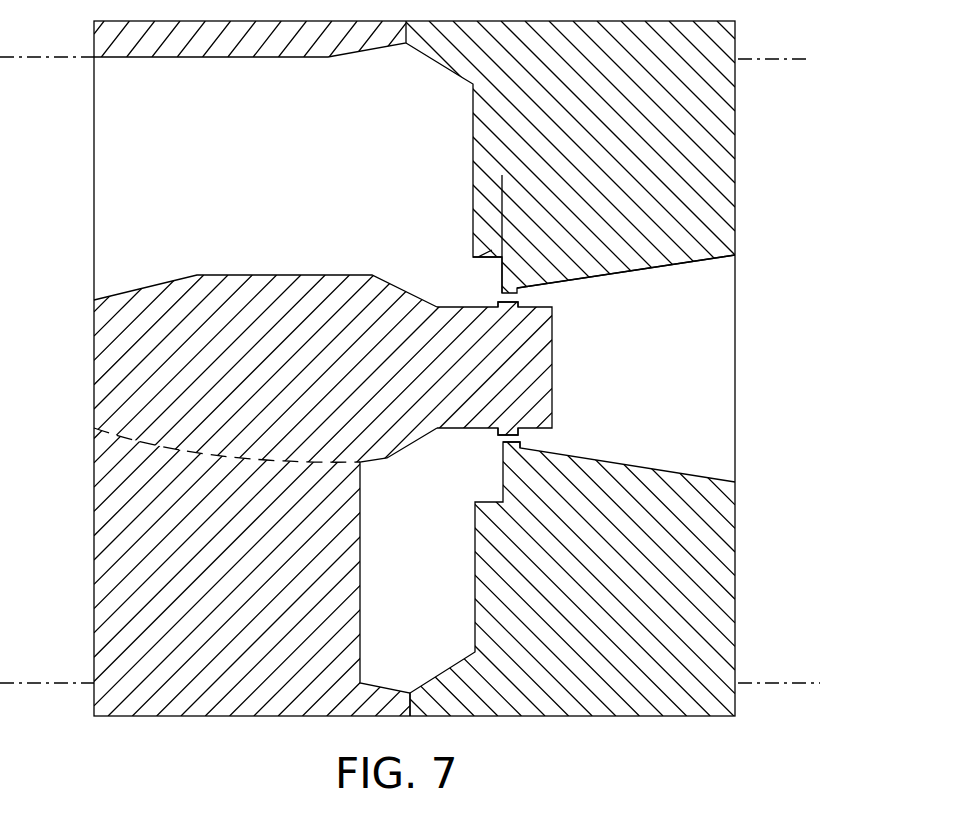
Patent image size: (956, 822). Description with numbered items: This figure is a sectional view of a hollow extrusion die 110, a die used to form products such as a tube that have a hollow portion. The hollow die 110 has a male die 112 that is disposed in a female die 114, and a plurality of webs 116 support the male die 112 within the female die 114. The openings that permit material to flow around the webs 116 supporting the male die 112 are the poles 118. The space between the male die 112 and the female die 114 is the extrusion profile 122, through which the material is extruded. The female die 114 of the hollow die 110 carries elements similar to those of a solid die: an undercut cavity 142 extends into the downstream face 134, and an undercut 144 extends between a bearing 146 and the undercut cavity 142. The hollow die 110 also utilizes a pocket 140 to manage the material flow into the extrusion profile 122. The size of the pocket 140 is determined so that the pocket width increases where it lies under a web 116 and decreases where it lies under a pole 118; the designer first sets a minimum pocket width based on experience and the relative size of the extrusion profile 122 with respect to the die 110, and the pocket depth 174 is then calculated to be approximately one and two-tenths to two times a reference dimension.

The hollow extrusion die 110 is at (592, 730).
The male die 112 is at (556, 380).
The female die 114 is at (737, 538).
The web 116 is at (178, 582).
The pole 118 is at (150, 185).
The extrusion profile 122 is at (505, 313).
The downstream face 134 is at (734, 172).
The pocket 140 is at (481, 266).
The undercut cavity 142 is at (690, 262).
The undercut 144 is at (521, 447).
The bearing 146 is at (506, 451).
The pocket depth 174 is at (547, 195).